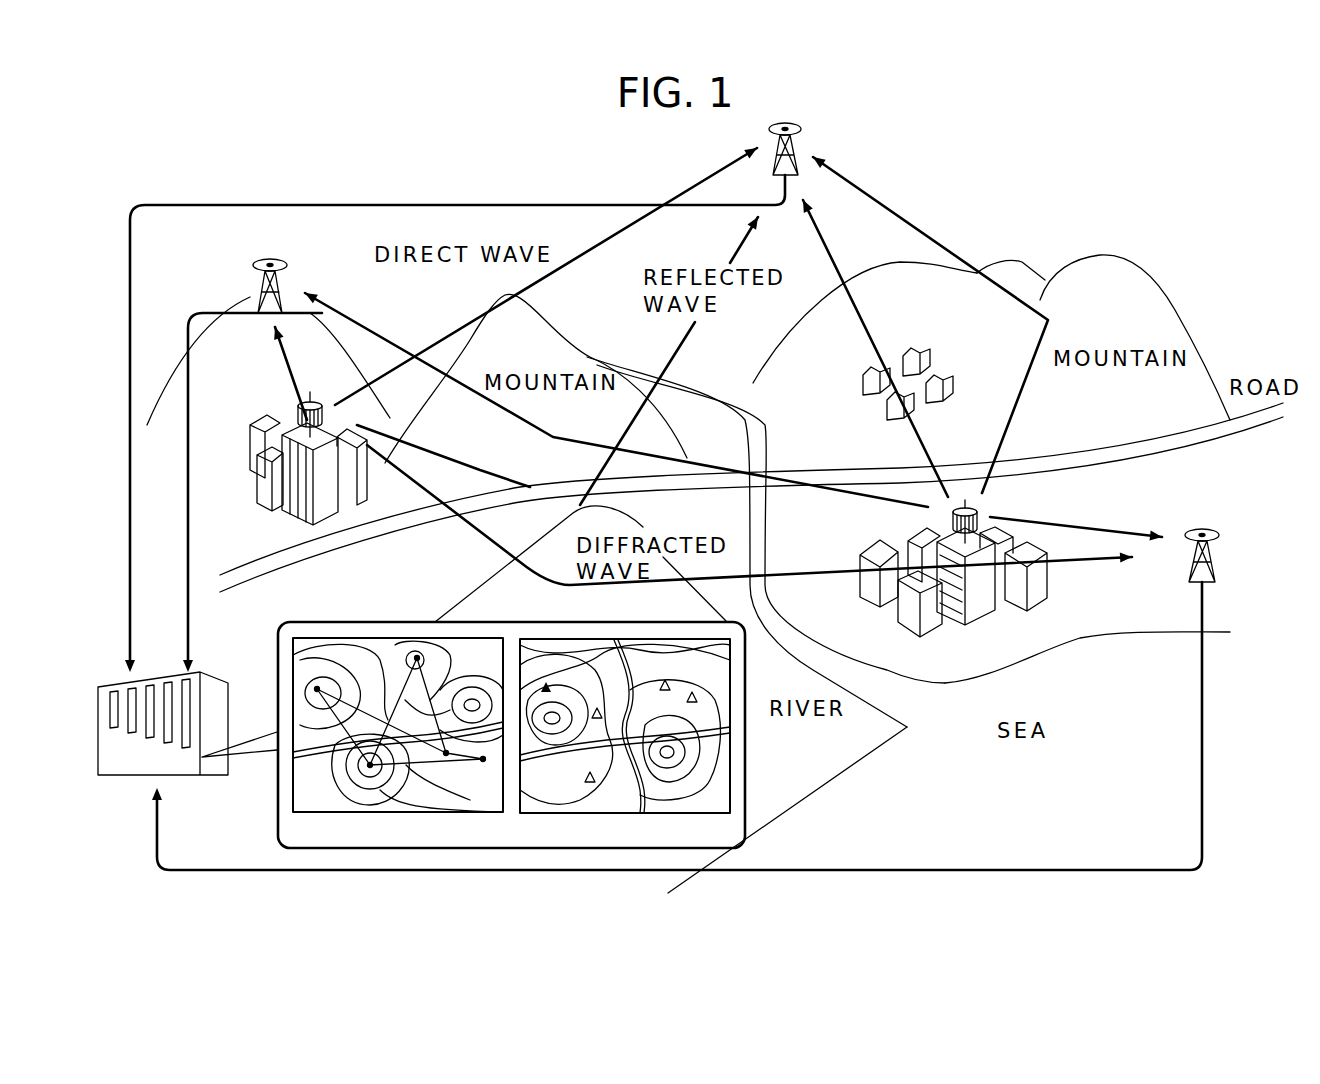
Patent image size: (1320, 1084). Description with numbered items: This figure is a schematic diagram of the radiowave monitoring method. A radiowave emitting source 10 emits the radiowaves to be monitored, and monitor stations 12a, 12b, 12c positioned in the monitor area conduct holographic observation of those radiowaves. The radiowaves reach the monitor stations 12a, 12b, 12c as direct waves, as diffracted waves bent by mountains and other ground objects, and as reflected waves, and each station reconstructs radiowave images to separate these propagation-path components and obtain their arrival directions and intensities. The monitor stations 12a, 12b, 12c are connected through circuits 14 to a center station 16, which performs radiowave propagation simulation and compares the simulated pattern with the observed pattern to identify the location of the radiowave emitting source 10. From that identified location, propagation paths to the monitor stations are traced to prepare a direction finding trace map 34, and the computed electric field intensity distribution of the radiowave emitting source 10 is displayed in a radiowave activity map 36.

The radiowave emitting source 10 is at (295, 400).
The monitor station 12a is at (810, 128).
The monitor station 12b is at (268, 258).
The monitor station 12c is at (1201, 530).
The circuits 14 is at (425, 205).
The center station 16 is at (120, 776).
The direction finding trace map 34 is at (373, 822).
The radiowave activity map 36 is at (596, 822).